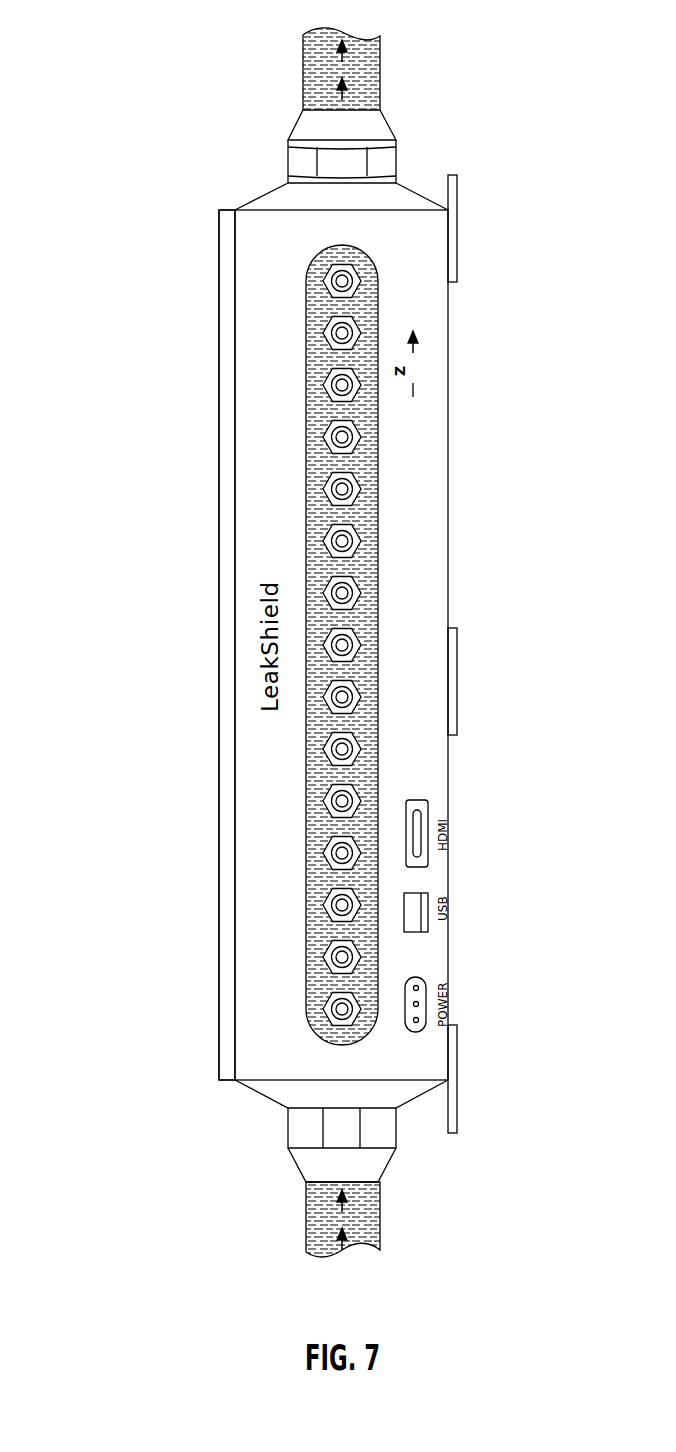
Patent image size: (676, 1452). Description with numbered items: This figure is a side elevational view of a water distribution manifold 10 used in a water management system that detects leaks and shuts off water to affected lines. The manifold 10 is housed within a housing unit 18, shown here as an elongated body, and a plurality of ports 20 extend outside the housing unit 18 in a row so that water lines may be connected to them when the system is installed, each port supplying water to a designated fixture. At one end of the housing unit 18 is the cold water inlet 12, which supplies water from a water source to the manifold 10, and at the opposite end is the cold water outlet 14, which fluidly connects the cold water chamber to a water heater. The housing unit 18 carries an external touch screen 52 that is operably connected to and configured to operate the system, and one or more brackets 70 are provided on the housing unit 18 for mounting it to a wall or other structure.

The water distribution manifold 10 is at (106, 26).
The cold water inlet 12 is at (378, 1215).
The cold water outlet 14 is at (380, 75).
The housing unit 18 is at (435, 455).
The ports 20 is at (330, 968).
The touch screen 52 is at (218, 422).
The brackets 70 is at (457, 228).